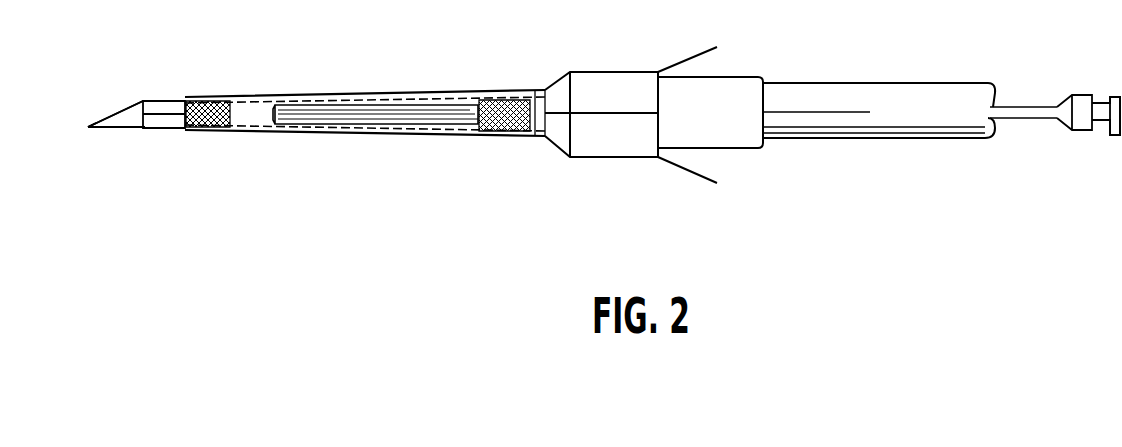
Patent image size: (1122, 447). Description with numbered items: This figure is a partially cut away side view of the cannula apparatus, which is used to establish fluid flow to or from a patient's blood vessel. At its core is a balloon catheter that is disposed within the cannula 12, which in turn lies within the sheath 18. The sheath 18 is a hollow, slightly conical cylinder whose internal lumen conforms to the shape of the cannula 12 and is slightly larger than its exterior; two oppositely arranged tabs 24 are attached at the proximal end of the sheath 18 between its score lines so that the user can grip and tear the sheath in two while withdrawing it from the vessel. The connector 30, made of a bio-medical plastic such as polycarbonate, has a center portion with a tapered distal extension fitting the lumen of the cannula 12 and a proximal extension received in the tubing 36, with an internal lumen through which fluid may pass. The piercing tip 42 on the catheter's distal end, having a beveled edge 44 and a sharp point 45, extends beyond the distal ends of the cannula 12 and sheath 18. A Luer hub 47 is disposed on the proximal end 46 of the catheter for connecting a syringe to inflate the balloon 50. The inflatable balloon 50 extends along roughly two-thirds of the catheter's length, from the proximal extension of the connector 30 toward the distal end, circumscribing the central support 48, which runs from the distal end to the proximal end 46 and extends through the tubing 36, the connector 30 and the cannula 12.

The cannula 12 is at (242, 120).
The sheath 18 is at (172, 128).
The tabs 24 is at (688, 55).
The connector 30 is at (745, 138).
The tubing 36 is at (885, 132).
The piercing tip 42 is at (127, 128).
The beveled edge 44 is at (112, 116).
The sharp point 45 is at (88, 128).
The proximal end 46 is at (1058, 124).
The Luer hub 47 is at (1117, 95).
The central support 48 is at (403, 132).
The inflatable balloon 50 is at (318, 126).